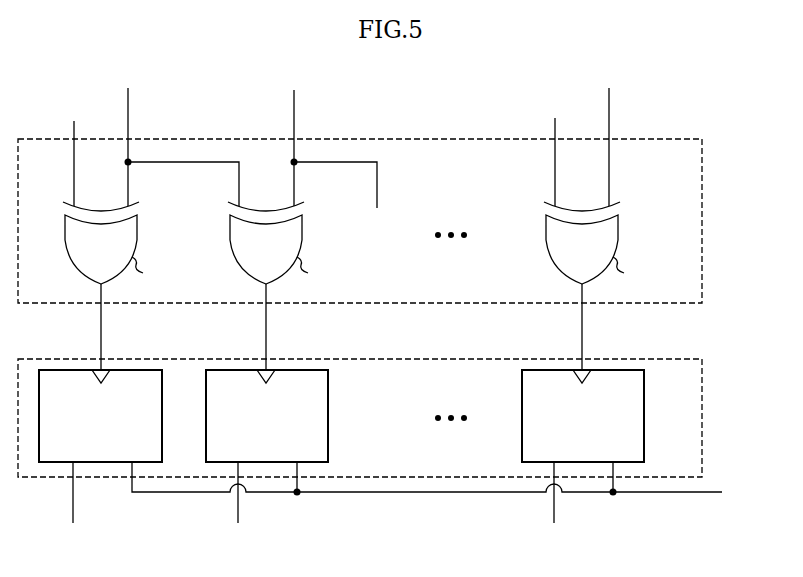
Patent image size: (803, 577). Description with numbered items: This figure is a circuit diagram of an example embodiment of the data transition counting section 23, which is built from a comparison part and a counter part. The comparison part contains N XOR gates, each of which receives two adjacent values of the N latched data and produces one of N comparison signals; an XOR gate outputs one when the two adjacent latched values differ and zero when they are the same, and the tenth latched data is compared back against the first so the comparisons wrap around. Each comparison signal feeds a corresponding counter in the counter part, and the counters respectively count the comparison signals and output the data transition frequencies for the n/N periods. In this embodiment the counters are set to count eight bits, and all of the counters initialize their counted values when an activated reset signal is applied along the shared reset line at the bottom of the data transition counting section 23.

The data transition counting section 23 is at (60, 52).